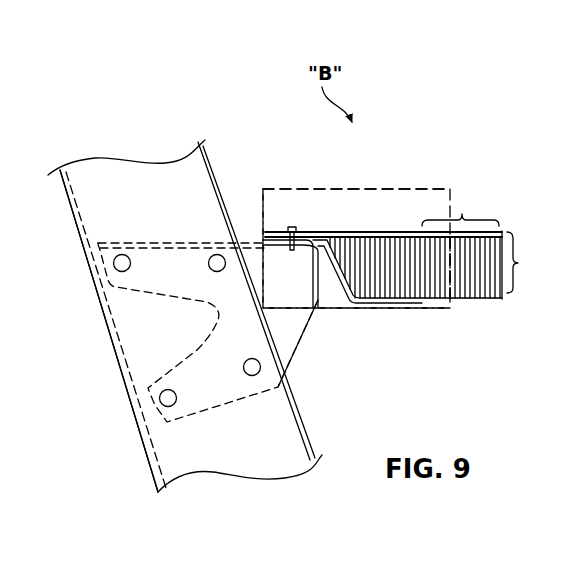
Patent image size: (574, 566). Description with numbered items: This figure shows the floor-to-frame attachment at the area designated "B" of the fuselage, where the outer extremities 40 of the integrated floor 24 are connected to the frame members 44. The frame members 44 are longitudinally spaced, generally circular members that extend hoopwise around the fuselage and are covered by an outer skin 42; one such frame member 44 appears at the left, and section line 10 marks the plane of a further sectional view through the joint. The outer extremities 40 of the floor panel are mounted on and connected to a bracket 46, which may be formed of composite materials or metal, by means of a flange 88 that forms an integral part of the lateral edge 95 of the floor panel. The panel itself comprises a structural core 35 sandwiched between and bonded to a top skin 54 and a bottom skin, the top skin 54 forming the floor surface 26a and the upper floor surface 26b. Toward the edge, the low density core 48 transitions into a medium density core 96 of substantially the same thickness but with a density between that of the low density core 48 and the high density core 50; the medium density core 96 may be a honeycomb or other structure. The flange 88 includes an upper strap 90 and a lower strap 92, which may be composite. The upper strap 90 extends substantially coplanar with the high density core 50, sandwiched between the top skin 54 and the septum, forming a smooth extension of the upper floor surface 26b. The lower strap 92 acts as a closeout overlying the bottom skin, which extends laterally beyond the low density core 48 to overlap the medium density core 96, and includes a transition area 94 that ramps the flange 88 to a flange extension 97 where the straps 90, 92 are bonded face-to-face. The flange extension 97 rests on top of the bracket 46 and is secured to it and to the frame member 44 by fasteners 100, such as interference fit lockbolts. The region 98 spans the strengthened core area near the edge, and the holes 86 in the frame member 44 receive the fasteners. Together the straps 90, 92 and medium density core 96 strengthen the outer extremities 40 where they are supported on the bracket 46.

The section line 10 is at (38, 145).
The integrated floor 24 is at (423, 125).
The floor surface 26a is at (441, 311).
The upper floor surface 26b is at (368, 228).
The structural core 35 is at (528, 262).
The outer extremities 40 is at (456, 169).
The outer skin 42 is at (123, 360).
The frame members 44 is at (153, 183).
The bracket 46 is at (297, 293).
The low density core 48 is at (477, 278).
The high density core 50 is at (490, 230).
The top skin 54 is at (468, 224).
The fastener holes 86 is at (122, 258).
The flange 88 is at (331, 165).
The upper strap 90 is at (337, 230).
The lower strap 92 is at (343, 285).
The transition area 94 is at (338, 291).
The lateral edge 95 is at (307, 175).
The medium density core 96 is at (389, 256).
The flange extension 97 is at (263, 210).
The fin section 98 is at (460, 209).
The fastener 100 is at (291, 226).